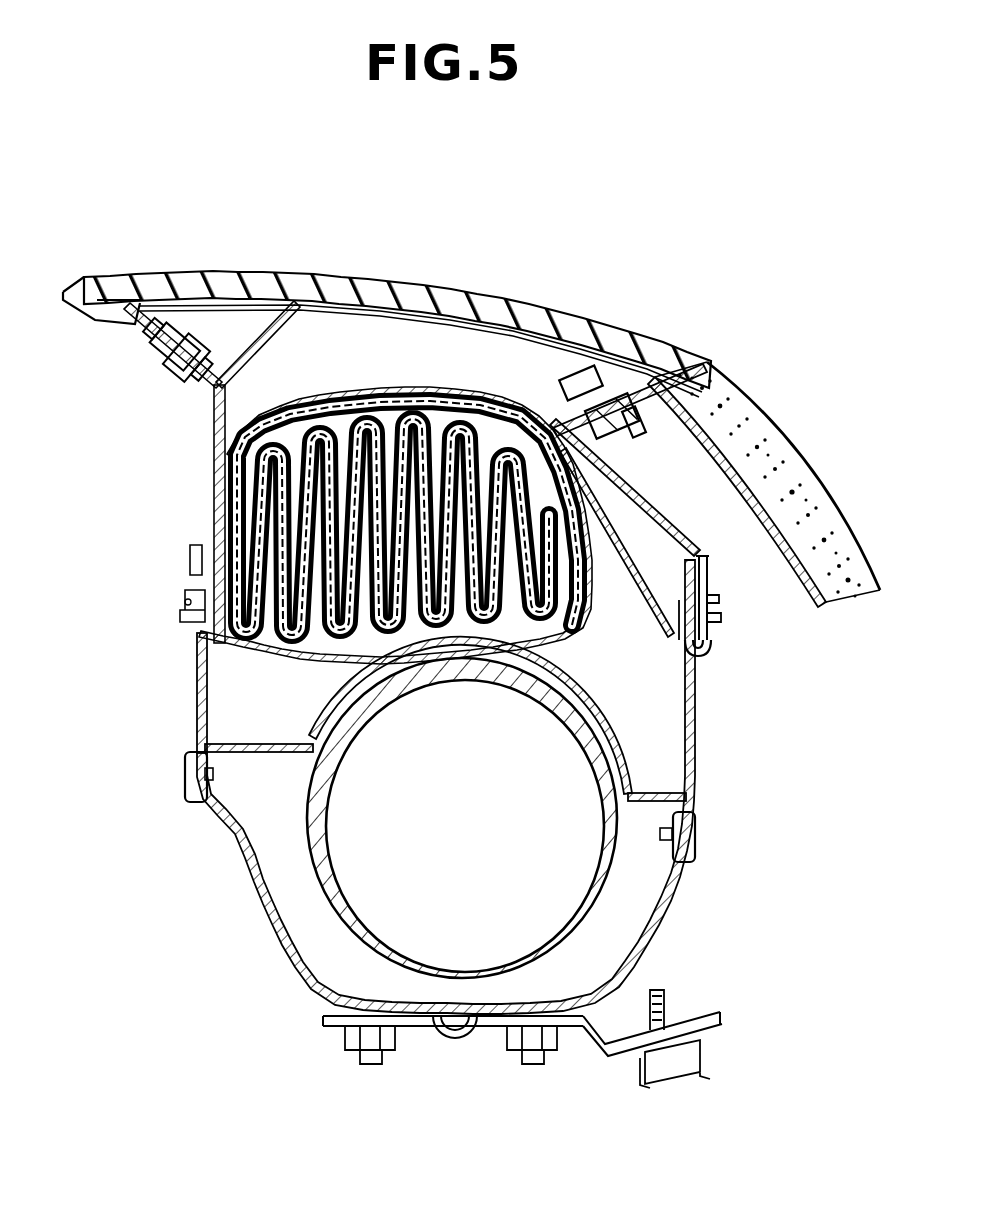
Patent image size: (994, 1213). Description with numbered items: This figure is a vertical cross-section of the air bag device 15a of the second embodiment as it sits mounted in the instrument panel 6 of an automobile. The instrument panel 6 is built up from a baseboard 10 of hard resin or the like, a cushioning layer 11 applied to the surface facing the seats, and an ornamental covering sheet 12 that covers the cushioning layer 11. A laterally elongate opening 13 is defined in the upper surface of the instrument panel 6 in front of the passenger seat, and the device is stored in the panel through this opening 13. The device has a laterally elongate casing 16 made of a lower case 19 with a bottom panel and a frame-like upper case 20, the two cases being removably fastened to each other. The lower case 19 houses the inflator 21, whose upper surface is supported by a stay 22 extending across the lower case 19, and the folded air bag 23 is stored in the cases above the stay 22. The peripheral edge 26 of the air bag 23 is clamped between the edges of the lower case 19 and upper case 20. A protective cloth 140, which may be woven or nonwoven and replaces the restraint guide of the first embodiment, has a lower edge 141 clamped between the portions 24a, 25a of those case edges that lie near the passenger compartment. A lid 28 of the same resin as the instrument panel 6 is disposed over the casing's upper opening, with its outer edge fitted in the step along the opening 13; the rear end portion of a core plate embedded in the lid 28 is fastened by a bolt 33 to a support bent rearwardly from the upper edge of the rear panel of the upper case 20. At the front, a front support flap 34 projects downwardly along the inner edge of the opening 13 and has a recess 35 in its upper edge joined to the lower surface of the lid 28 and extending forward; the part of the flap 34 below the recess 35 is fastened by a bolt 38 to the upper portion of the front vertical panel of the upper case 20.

The instrument panel 6 is at (774, 514).
The baseboard 10 is at (822, 605).
The cushioning layer 11 is at (822, 512).
The ornamental covering sheet 12 is at (770, 430).
The opening 13 is at (668, 362).
The top plate portion 15a is at (333, 248).
The casing 16 is at (182, 790).
The lower case 19 is at (275, 940).
The upper case 20 is at (205, 445).
The inflator 21 is at (605, 892).
The stay 22 is at (305, 752).
The air bag 23 is at (250, 480).
The portion of lower case edge 24a is at (712, 645).
The portion of upper case edge 25a is at (678, 640).
The peripheral edge of air bag 26 is at (718, 612).
The lid 28 is at (438, 282).
The bolt 33 is at (160, 372).
The front support flap 34 is at (590, 370).
The recess 35 is at (640, 370).
The bolt 38 is at (634, 440).
The protective cloth 140 is at (480, 378).
The lower edge of protective cloth 141 is at (704, 587).